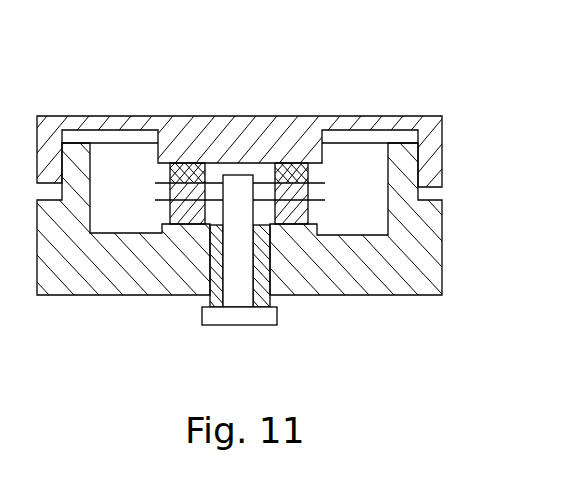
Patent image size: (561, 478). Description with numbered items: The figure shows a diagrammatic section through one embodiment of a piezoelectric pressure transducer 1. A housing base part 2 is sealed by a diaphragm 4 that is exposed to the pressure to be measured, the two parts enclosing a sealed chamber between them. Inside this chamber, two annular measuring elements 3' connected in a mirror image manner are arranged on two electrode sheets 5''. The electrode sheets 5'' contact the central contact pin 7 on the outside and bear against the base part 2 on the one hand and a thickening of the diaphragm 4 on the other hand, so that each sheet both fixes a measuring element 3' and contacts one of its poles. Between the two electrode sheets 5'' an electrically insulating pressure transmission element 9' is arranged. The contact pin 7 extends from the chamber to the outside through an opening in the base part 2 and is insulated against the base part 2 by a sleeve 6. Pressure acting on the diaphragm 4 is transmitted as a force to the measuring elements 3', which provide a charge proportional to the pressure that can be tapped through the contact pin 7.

The piezoelectric pressure transducer 1 is at (467, 87).
The housing base part 2 is at (378, 295).
The annular measuring element 3' is at (256, 205).
The diaphragm 4 is at (113, 124).
The electrode sheet 5'' is at (164, 205).
The sleeve 6 is at (211, 276).
The contact pin 7 is at (223, 320).
The electrically insulating pressure transmission element 9' is at (276, 139).